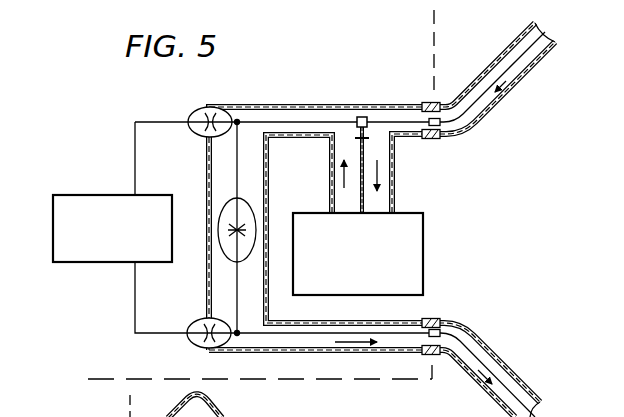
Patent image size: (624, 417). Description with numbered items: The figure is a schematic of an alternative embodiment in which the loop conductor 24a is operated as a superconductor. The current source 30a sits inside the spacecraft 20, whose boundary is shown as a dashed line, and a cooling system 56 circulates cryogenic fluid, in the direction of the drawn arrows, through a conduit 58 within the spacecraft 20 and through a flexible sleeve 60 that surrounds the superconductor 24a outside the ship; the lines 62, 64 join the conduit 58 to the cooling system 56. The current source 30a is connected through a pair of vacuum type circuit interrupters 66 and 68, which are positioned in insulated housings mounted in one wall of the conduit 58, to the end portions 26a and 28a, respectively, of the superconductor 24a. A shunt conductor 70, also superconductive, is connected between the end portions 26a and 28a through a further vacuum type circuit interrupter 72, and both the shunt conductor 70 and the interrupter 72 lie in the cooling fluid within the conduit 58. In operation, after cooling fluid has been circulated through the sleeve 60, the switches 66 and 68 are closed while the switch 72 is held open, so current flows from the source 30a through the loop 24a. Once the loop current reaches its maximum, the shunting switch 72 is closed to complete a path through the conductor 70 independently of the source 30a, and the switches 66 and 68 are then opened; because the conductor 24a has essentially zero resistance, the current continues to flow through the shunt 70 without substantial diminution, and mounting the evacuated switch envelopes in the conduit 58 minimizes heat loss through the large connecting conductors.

The spacecraft 20 is at (435, 61).
The loop conductor 24a is at (525, 53).
The end portion 26a is at (412, 338).
The end portion 28a is at (407, 105).
The current source 30a is at (110, 194).
The cooling system 56 is at (421, 252).
The conduit 58 is at (328, 105).
The flexible sleeve 60 is at (505, 93).
The coolant supply line 62 is at (327, 173).
The coolant return line 64 is at (397, 180).
The vacuum type circuit interrupter 66 is at (191, 342).
The vacuum type circuit interrupter 68 is at (195, 113).
The shunt conductor 70 is at (237, 288).
The vacuum type circuit interrupter 72 is at (230, 203).